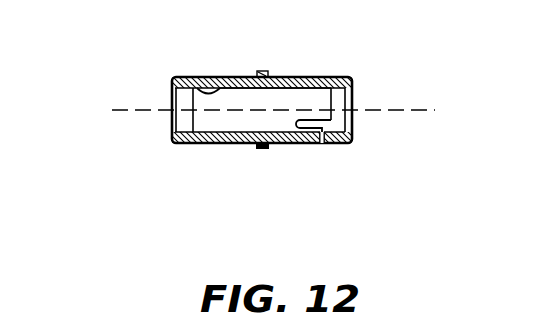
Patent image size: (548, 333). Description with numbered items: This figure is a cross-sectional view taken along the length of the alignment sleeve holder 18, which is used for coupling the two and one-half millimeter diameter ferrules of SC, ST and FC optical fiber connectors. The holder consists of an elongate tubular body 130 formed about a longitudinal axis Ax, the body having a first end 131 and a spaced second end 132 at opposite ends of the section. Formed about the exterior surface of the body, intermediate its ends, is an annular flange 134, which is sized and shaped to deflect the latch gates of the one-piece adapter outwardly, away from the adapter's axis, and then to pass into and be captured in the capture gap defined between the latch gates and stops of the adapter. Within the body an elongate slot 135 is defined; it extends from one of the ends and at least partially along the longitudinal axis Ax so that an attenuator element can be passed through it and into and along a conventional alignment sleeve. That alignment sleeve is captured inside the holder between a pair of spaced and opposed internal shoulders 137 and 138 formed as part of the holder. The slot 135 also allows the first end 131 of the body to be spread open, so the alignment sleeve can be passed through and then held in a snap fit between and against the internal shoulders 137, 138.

The alignment sleeve holder 18 is at (132, 82).
The elongate tubular body 130 is at (210, 143).
The first end 131 is at (352, 103).
The second end 132 is at (183, 117).
The annular flange 134 is at (257, 148).
The elongate slot 135 is at (321, 135).
The internal shoulder 137 is at (303, 87).
The internal shoulder 138 is at (218, 88).
The longitudinal axis Ax is at (412, 113).